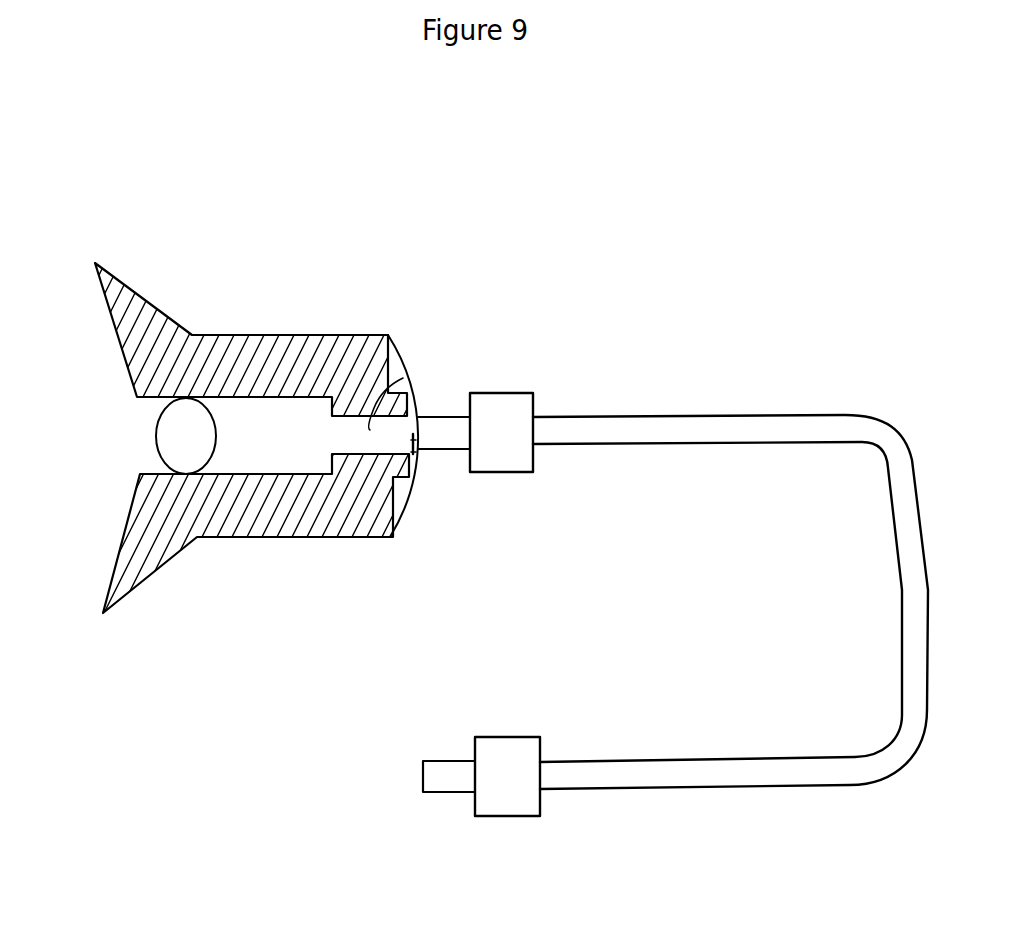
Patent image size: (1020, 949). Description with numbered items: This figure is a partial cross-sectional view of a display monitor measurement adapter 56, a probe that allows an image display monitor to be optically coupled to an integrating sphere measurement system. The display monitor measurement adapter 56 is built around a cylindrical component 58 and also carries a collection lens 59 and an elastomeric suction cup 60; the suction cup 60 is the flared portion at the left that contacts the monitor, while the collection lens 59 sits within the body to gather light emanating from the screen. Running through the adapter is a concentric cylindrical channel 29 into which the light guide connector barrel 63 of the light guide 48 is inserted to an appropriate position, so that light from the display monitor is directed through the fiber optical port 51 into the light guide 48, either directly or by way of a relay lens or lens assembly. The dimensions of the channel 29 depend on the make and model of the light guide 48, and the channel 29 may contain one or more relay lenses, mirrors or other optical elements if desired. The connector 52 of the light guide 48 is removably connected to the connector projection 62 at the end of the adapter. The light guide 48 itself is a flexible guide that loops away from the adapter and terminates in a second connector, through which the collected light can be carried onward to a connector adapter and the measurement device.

The display monitor measurement adapter 56 is at (313, 440).
The cylindrical component 58 is at (390, 333).
The concentric cylindrical channel 29 is at (405, 380).
The light guide connector barrel 63 is at (438, 416).
The connector 52 is at (533, 392).
The light guide 48 is at (603, 413).
The connector projection 62 is at (417, 460).
The fiber optical port 51 is at (418, 455).
The collection lens 59 is at (165, 452).
The elastomeric suction cup 60 is at (130, 541).